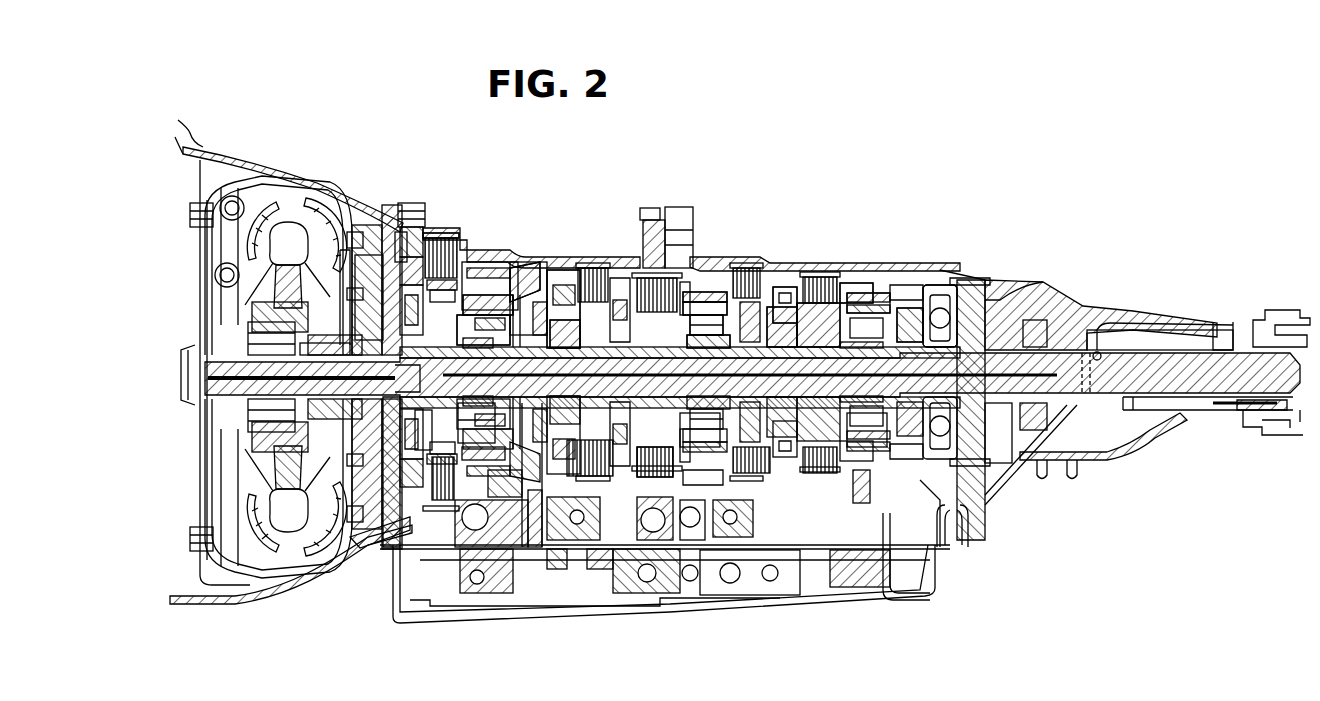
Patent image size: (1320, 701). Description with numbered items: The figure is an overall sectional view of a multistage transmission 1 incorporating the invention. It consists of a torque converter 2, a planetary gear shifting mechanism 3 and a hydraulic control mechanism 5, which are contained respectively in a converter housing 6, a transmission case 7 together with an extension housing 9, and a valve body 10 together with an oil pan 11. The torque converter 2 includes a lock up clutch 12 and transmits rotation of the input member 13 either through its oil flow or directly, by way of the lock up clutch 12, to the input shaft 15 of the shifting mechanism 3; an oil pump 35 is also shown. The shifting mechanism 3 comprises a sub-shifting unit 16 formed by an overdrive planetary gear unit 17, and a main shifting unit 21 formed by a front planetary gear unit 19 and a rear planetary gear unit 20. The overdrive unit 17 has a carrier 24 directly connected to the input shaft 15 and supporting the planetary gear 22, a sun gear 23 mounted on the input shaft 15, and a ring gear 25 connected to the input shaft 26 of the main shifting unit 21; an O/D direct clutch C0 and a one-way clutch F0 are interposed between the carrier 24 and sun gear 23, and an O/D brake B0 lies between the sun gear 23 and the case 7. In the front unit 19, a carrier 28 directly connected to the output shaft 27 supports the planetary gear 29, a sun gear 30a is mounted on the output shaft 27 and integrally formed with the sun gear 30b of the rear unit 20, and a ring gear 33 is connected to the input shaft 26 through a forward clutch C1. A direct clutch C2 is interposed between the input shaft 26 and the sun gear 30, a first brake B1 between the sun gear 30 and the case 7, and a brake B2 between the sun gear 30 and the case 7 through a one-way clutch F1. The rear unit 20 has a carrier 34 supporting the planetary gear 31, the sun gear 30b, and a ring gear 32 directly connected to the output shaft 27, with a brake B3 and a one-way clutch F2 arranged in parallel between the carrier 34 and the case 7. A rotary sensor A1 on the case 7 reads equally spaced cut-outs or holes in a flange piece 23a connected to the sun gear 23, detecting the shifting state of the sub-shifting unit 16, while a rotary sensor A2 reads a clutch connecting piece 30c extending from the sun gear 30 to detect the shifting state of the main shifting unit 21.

The multistage transmission 1 is at (730, 104).
The torque converter 2 is at (313, 166).
The planetary gear shifting mechanism 3 is at (763, 185).
The hydraulic control mechanism 5 is at (686, 613).
The converter housing 6 is at (363, 238).
The transmission case 7 is at (560, 272).
The extension housing 9 is at (1115, 310).
The valve body 10 is at (781, 597).
The oil pan 11 is at (738, 606).
The lock up clutch 12 is at (207, 213).
The input member 13 is at (185, 356).
The input shaft 15 is at (325, 345).
The sub-shifting unit 16 is at (471, 228).
The overdrive planetary gear unit 17 is at (500, 282).
The front planetary gear unit 19 is at (730, 292).
The rear planetary gear unit 20 is at (892, 297).
The main shifting unit 21 is at (800, 257).
The planetary gear 22 is at (480, 270).
The sun gear 23 is at (512, 300).
The flange piece 23a is at (403, 232).
The carrier 24 is at (472, 466).
The ring gear 25 is at (520, 277).
The input shaft 26 is at (565, 285).
The output shaft 27 is at (1165, 358).
The carrier 28 is at (710, 474).
The planetary gear 29 is at (732, 302).
The sun gear 30 is at (800, 282).
The sun gear 30a is at (700, 430).
The sun gear 30b is at (867, 430).
The clutch connecting piece 30c is at (710, 272).
The planetary gear 31 is at (872, 292).
The ring gear 32 is at (856, 290).
The ring gear 33 is at (705, 292).
The carrier 34 is at (893, 470).
The oil pump 35 is at (343, 250).
The rotary sensor A1 is at (413, 215).
The rotary sensor A2 is at (690, 225).
The O/D brake B0 is at (447, 255).
The first brake B1 is at (617, 492).
The brake B2 is at (765, 272).
The brake B3 is at (822, 280).
The O/D direct clutch C0 is at (440, 262).
The forward clutch C1 is at (642, 280).
The direct clutch C2 is at (590, 290).
The one-way clutch F0 is at (407, 380).
The one-way clutch F1 is at (776, 283).
The one-way clutch F2 is at (843, 277).